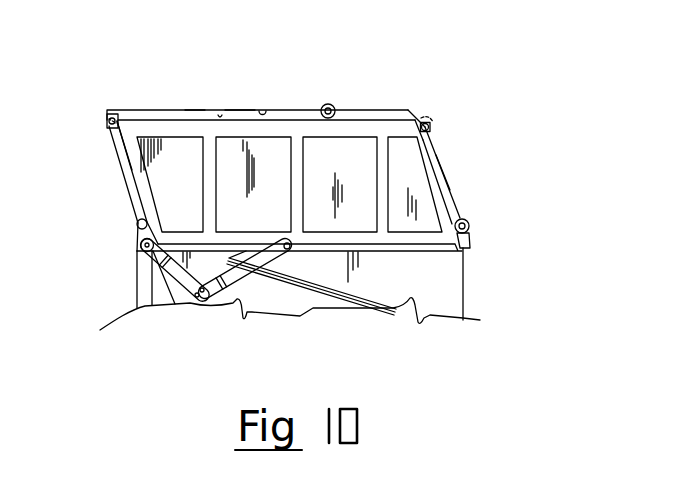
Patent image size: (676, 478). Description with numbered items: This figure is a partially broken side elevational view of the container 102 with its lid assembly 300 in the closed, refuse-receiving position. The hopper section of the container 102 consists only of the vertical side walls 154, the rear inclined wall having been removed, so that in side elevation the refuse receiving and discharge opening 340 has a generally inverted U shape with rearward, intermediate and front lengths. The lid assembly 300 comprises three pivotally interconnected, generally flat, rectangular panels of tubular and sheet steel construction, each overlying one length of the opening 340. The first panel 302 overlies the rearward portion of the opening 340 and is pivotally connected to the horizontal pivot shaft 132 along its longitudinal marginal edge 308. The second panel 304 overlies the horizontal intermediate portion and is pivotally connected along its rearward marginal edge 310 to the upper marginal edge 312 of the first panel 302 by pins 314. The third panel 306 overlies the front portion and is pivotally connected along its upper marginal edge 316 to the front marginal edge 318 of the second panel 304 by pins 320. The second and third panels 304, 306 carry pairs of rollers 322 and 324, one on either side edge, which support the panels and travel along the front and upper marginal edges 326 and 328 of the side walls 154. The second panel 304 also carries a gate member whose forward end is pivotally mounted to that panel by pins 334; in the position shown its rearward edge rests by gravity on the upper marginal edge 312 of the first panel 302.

The lid assembly 300 is at (419, 60).
The first panel 302 is at (115, 148).
The second panel 304 is at (163, 110).
The third panel 306 is at (440, 143).
The longitudinal marginal edge 308 is at (138, 225).
The rearward marginal edge 310 is at (108, 114).
The upper marginal edge 312 is at (106, 120).
The pins 314 is at (108, 125).
The upper marginal edge 316 is at (430, 117).
The front marginal edge 318 is at (432, 108).
The pins 320 is at (431, 125).
The rollers 322 is at (325, 104).
The rollers 324 is at (470, 220).
The front marginal edge 326 is at (237, 118).
The upper marginal edge 328 is at (442, 163).
The pins 334 is at (258, 110).
The refuse receiving and discharge opening 340 is at (446, 192).
The side walls 154 is at (347, 168).
The pivot shaft 132 is at (140, 243).
The container 102 is at (537, 291).